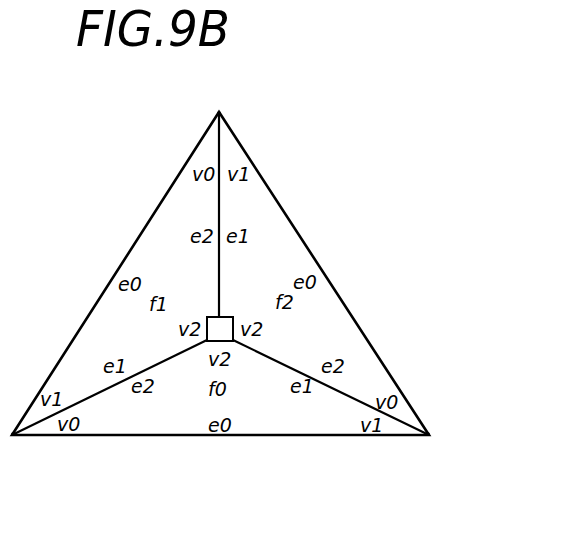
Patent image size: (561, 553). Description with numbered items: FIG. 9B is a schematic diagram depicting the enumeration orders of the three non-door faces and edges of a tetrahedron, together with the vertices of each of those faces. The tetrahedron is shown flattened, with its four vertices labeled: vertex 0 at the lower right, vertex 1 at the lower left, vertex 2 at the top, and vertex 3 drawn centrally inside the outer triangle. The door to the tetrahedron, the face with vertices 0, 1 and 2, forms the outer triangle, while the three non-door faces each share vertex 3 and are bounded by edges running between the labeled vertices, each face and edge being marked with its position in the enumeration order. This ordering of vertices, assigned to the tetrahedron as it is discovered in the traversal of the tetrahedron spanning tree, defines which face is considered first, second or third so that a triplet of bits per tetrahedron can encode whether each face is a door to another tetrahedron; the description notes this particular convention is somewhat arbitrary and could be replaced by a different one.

The vertex 0 is at (433, 454).
The vertex 1 is at (7, 453).
The vertex 2 is at (219, 98).
The vertex 3 is at (220, 329).